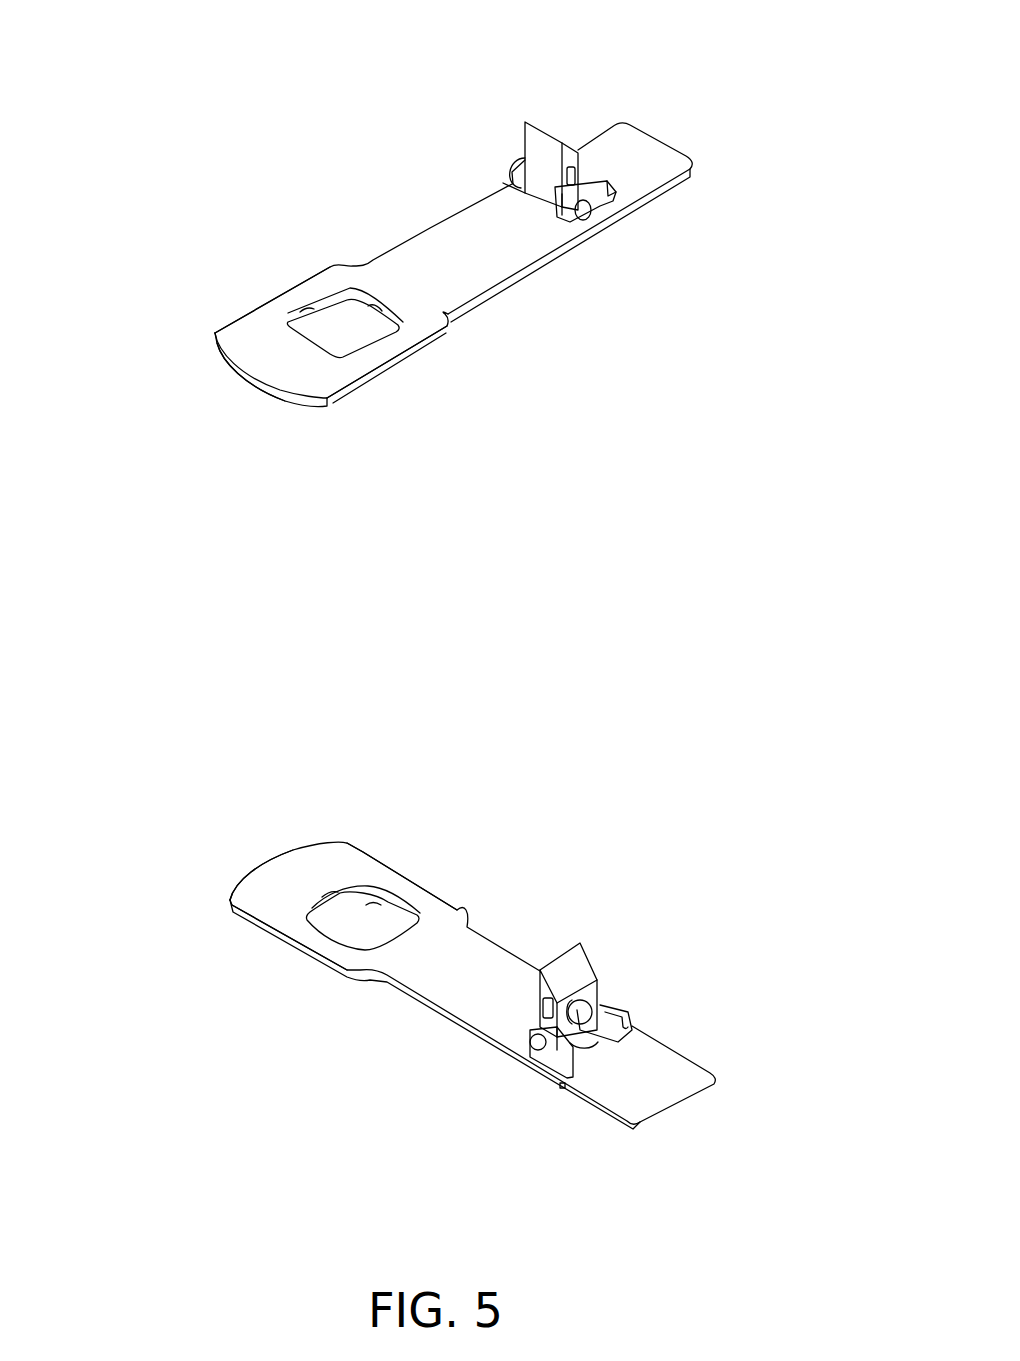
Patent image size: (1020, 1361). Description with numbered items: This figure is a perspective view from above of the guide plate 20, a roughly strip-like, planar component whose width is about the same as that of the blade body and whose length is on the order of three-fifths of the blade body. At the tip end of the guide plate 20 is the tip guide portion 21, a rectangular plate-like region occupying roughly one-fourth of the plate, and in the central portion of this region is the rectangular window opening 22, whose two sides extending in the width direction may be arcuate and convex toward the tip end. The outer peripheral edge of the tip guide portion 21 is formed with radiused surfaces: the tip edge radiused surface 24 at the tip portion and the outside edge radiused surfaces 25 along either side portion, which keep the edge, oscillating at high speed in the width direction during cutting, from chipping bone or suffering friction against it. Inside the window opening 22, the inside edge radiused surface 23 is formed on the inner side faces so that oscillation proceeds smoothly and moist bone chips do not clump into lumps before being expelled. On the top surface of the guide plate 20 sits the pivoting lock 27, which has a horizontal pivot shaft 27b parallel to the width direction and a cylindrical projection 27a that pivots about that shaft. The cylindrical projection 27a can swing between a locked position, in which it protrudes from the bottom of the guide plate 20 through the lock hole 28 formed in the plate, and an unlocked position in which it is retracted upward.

The guide plate 20 is at (419, 116).
The tip guide portion 21 is at (364, 383).
The window opening 22 is at (340, 323).
The inside edge radiused surface 23 is at (307, 311).
The tip edge radiused surface 24 is at (254, 386).
The outside edge radiused surface 25 is at (237, 320).
The pivoting lock 27 is at (540, 124).
The cylindrical projection 27a is at (593, 1013).
The pivot shaft 27b is at (586, 211).
The lock hole 28 is at (657, 1060).